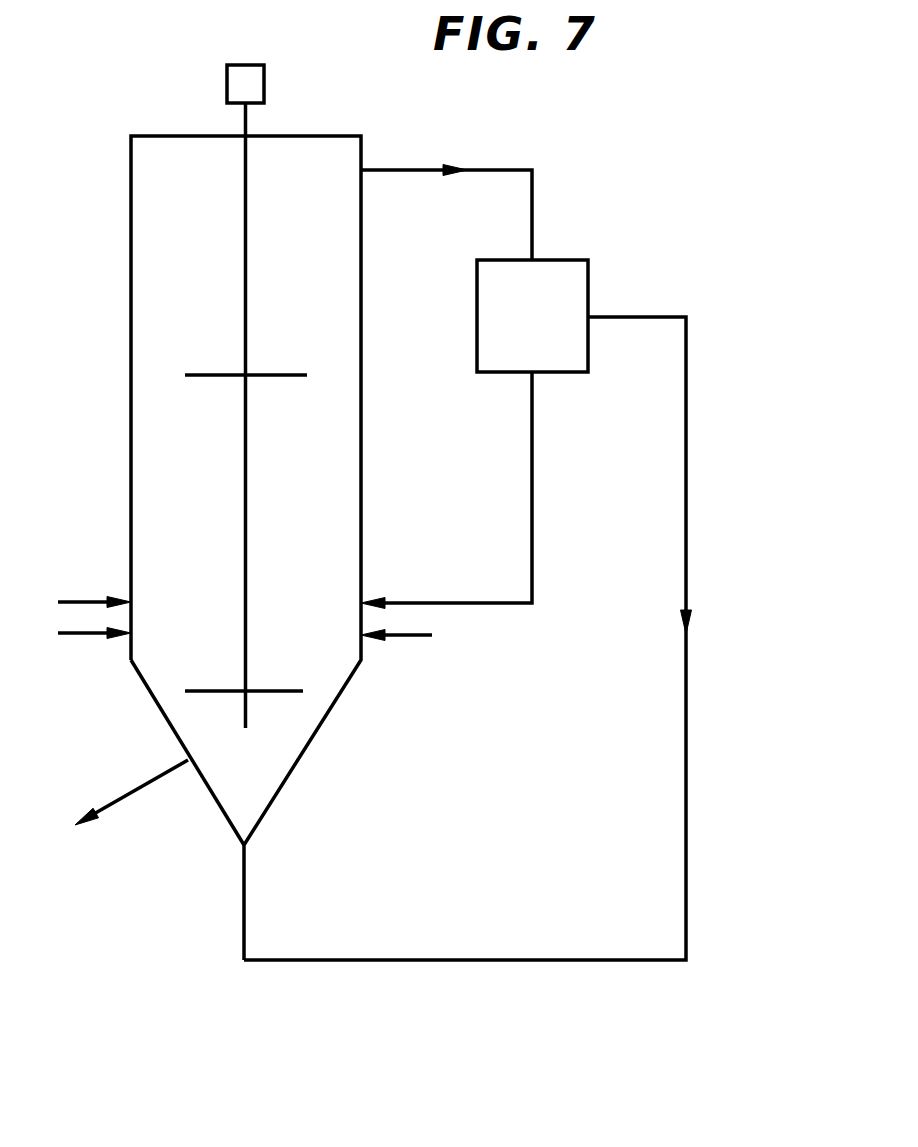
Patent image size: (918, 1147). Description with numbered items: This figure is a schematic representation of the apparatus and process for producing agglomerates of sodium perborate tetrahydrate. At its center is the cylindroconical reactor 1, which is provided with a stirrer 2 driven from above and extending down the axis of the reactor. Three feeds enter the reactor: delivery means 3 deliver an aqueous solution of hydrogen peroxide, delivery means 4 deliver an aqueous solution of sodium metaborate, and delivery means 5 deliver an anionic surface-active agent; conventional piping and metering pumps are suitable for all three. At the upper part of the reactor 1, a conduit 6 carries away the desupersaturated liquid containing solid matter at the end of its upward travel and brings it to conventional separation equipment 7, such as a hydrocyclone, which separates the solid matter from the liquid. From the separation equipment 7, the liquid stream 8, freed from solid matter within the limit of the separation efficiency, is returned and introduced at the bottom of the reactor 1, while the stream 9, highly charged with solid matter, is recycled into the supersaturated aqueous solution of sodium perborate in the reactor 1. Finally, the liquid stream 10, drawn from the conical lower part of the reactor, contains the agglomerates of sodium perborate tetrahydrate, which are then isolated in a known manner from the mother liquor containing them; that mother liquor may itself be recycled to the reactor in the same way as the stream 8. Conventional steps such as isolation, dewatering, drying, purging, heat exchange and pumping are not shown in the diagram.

The cylindroconical reactor 1 is at (186, 495).
The stirrer 2 is at (270, 373).
The delivery means 3 is at (433, 637).
The delivery means 4 is at (68, 636).
The delivery means 5 is at (68, 600).
The conduit 6 is at (490, 168).
The separation equipment 7 is at (537, 329).
The liquid stream 8 is at (688, 660).
The stream 9 is at (432, 602).
The liquid stream 10 is at (134, 789).